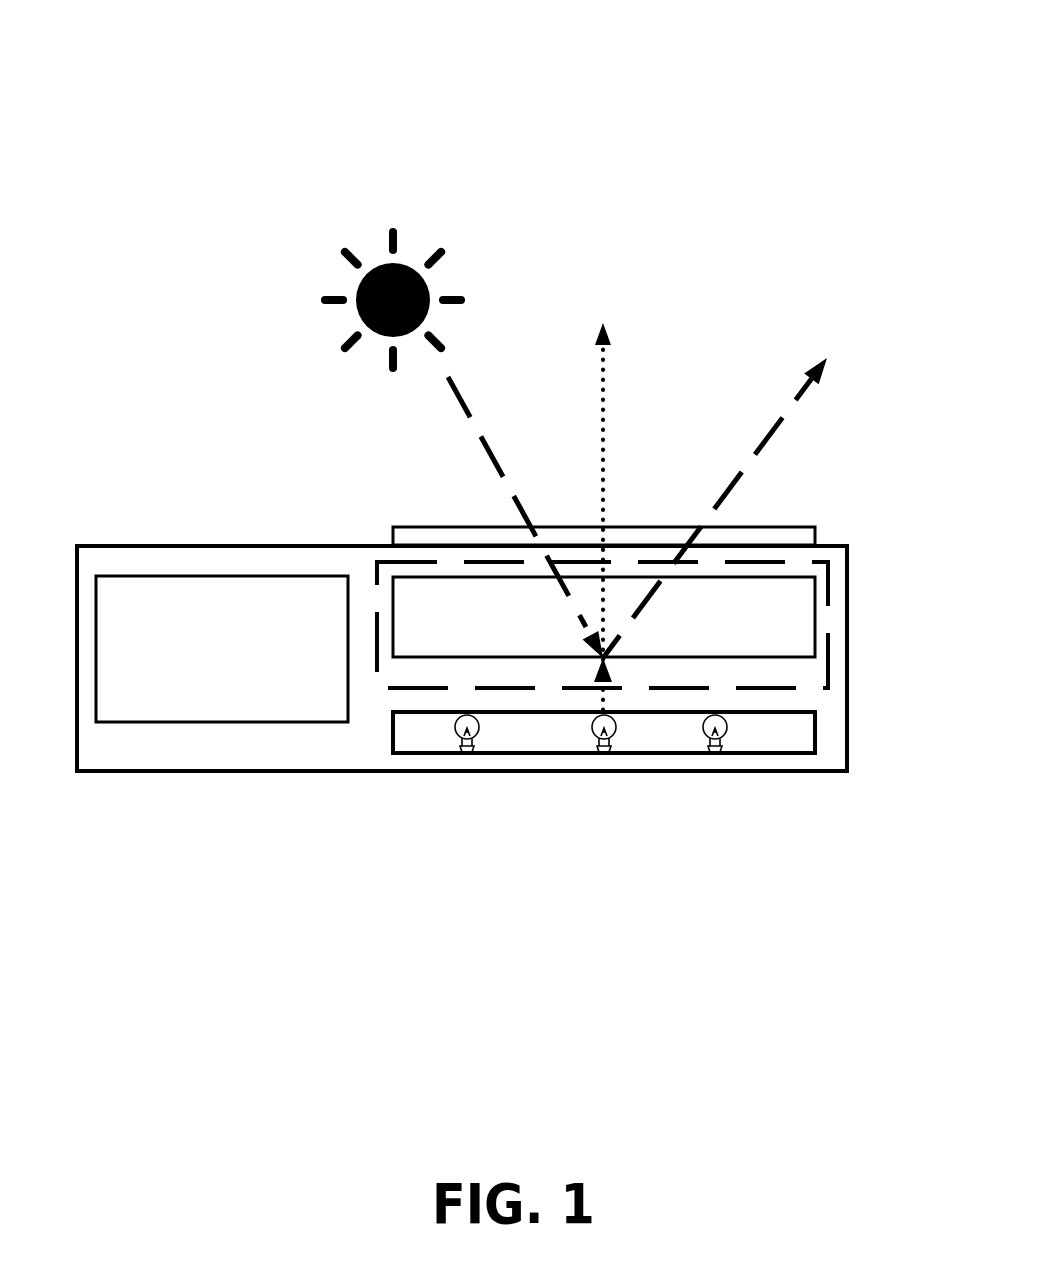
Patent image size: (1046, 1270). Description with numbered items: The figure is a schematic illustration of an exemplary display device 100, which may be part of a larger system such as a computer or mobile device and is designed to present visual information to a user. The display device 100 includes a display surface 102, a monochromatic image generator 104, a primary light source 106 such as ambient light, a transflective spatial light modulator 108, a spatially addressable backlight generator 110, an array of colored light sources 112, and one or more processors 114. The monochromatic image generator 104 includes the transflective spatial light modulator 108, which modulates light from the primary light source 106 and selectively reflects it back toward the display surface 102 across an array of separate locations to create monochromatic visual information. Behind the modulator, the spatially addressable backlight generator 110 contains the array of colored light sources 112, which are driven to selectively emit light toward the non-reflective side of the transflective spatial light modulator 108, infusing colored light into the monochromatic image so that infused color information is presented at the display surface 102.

The display device 100 is at (774, 92).
The display surface 102 is at (781, 517).
The monochromatic image generator 104 is at (840, 676).
The primary light source 106 is at (452, 214).
The transflective spatial light modulator 108 is at (604, 617).
The spatially addressable backlight generator 110 is at (830, 732).
The array of colored light sources 112 is at (467, 752).
The processors 114 is at (222, 649).